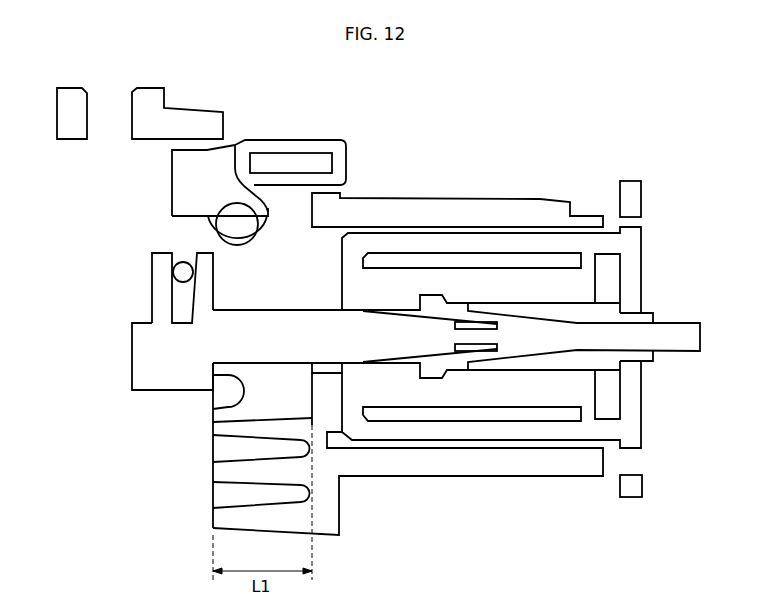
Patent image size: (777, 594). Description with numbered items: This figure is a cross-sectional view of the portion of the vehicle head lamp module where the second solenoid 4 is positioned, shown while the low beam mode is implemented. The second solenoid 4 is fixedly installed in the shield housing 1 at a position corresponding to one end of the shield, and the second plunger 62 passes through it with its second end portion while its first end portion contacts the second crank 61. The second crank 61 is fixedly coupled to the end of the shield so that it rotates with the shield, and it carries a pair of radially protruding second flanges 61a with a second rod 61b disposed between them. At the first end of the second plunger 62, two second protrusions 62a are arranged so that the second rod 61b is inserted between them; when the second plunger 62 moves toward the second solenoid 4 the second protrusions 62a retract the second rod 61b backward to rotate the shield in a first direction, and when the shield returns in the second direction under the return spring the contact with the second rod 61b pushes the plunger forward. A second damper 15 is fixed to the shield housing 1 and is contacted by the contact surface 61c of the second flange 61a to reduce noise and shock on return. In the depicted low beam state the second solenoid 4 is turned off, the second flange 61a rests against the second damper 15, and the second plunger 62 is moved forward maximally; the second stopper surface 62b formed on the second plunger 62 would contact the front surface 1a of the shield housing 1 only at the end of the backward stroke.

The shield housing 1 is at (427, 387).
The front surface of the shield housing 1a is at (312, 393).
The second solenoid 4 is at (478, 242).
The second damper 15 is at (313, 147).
The second crank 61 is at (232, 231).
The second flange 61a is at (192, 183).
The second rod 61b is at (180, 272).
The contact surface 61c is at (237, 157).
The second plunger 62 is at (397, 347).
The second protrusions 62a is at (203, 303).
The second stopper surface 62b is at (213, 409).